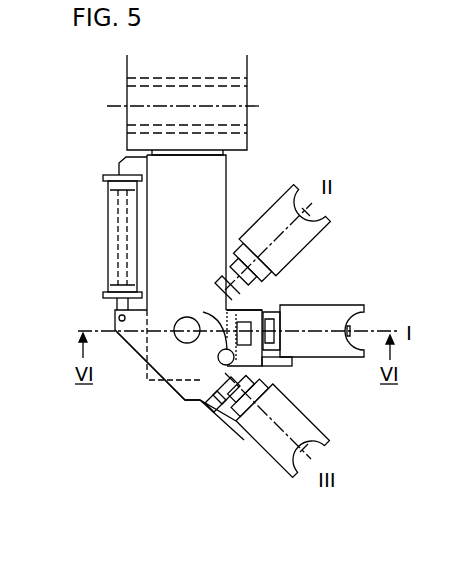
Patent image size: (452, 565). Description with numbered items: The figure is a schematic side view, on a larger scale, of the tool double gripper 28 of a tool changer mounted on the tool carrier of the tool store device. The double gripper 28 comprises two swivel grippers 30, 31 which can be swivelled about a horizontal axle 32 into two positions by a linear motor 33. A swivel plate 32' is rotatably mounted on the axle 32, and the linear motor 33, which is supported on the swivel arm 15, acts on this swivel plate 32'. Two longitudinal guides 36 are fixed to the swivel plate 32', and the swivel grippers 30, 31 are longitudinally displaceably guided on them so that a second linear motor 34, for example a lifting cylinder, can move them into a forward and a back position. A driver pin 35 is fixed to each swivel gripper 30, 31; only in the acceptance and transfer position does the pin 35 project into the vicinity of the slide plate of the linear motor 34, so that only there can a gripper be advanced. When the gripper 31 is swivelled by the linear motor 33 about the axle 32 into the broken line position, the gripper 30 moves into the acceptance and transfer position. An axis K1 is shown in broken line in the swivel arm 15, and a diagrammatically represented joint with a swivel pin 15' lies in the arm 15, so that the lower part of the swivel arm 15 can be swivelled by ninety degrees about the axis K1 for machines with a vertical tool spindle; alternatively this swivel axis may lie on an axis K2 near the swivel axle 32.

The swivel pin 15' is at (219, 102).
The axis K1 is at (118, 106).
The swivel arm 15 is at (214, 230).
The linear motor 33 is at (110, 222).
The axis K2 is at (92, 330).
The tool double gripper 28 is at (126, 387).
The swivel plate 32' is at (157, 381).
The horizontal axle 32 is at (178, 305).
The linear motor 34 is at (218, 324).
The swivel gripper 31 is at (328, 307).
The swivel gripper 30 is at (272, 448).
The driver pin 35 is at (277, 364).
The longitudinal guides 36 is at (230, 415).